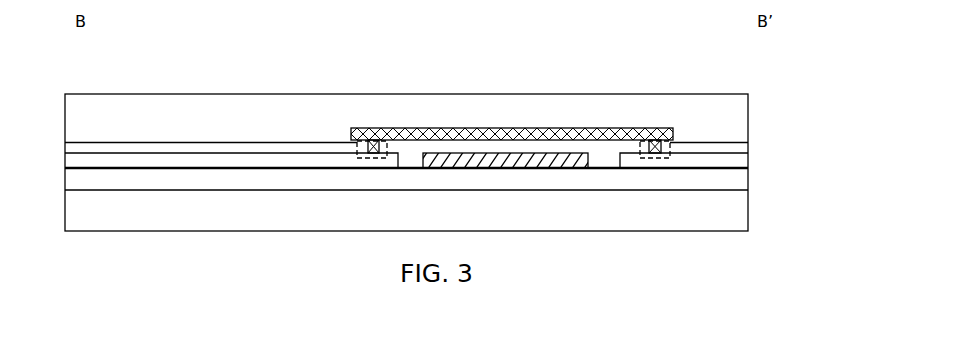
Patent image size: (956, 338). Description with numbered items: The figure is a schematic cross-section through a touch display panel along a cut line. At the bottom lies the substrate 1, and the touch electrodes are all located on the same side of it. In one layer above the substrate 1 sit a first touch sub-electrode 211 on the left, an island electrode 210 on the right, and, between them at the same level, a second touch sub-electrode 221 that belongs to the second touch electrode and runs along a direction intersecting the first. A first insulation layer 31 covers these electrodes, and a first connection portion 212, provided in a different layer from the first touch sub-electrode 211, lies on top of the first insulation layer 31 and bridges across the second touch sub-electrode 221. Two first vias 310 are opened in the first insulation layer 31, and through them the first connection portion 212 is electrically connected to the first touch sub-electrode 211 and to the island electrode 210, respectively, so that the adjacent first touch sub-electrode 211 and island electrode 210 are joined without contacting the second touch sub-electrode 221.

The substrate 1 is at (723, 212).
The first touch sub-electrode 211 is at (182, 163).
The first insulation layer 31 is at (264, 147).
The first via 310 is at (366, 149).
The second touch sub-electrode 221 is at (453, 159).
The first connection portion 212 is at (521, 135).
The island electrode 210 is at (713, 159).